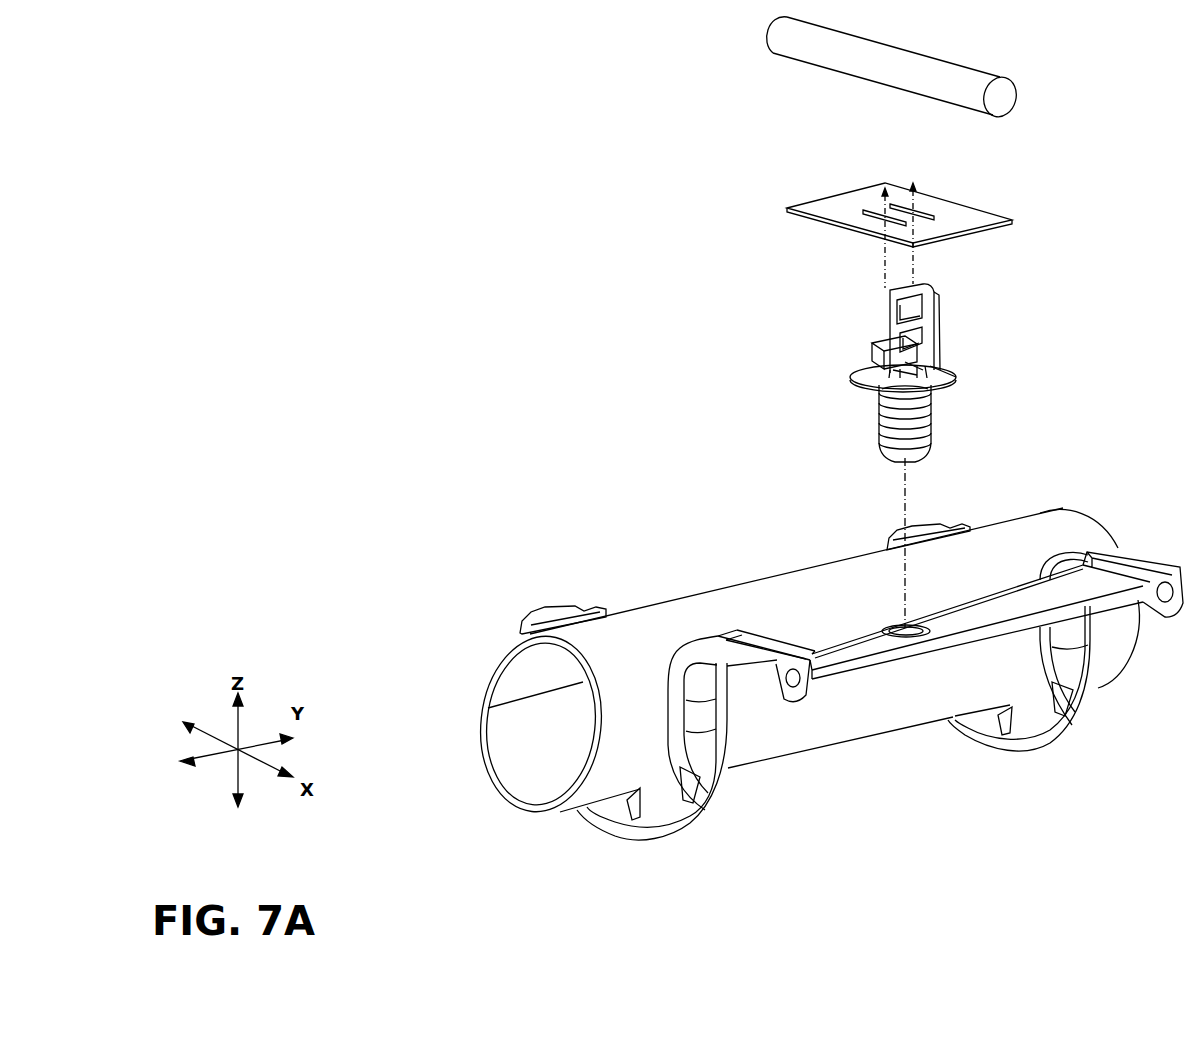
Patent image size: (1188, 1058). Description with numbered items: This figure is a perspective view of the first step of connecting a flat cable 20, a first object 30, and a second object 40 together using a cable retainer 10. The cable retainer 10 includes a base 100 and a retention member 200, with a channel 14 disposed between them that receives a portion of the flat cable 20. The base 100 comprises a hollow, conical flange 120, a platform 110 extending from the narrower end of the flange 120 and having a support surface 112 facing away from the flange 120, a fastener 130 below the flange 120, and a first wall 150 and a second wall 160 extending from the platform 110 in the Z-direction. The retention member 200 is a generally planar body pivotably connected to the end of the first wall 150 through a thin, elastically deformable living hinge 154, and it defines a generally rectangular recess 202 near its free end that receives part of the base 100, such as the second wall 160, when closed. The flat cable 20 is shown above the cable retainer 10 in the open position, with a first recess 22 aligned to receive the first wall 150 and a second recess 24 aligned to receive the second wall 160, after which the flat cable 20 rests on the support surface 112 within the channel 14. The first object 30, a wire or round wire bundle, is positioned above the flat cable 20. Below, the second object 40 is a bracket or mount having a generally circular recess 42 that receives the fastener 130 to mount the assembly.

The first object 30 is at (975, 77).
The flat cable 20 is at (815, 213).
The first recess 22 is at (903, 204).
The second recess 24 is at (867, 217).
The retention member 200 is at (927, 290).
The recess 202 is at (898, 307).
The cable retainer 10 is at (943, 468).
The base 100 is at (957, 447).
The second wall 160 is at (870, 346).
The living hinge 154 is at (937, 358).
The first wall 150 is at (940, 368).
The flange 120 is at (870, 378).
The channel 14 is at (955, 378).
The platform 110 is at (923, 370).
The support surface 112 is at (917, 375).
The fastener 130 is at (878, 423).
The second object 40 is at (865, 663).
The recess 42 is at (930, 624).